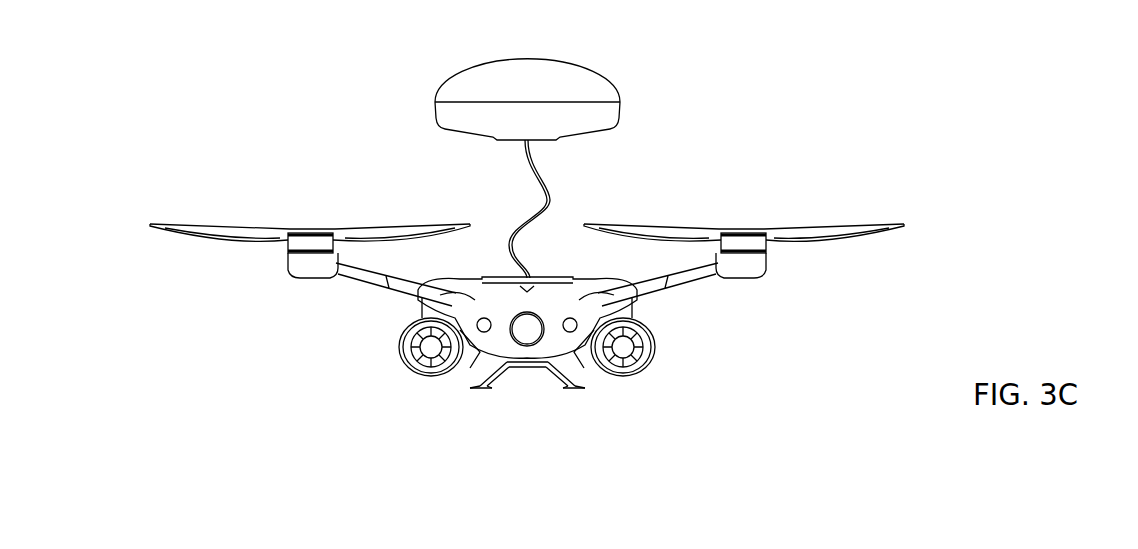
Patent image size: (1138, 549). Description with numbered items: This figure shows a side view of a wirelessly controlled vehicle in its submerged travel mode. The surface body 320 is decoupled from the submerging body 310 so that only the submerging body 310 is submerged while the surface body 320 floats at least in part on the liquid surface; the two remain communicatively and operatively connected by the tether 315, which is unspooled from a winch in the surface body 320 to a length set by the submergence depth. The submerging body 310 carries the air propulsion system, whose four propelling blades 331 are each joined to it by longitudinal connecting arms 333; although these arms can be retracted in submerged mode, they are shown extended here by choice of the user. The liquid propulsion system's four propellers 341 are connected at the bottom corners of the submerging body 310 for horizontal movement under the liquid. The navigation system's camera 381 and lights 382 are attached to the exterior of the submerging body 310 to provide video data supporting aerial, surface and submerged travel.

The submerging body 310 is at (553, 312).
The tether 315 is at (548, 188).
The surface body 320 is at (580, 75).
The propelling blades 331 is at (244, 226).
The longitudinal connecting arms 333 is at (385, 288).
The propellers 341 is at (413, 372).
The camera 381 is at (527, 325).
The lights 382 is at (480, 331).